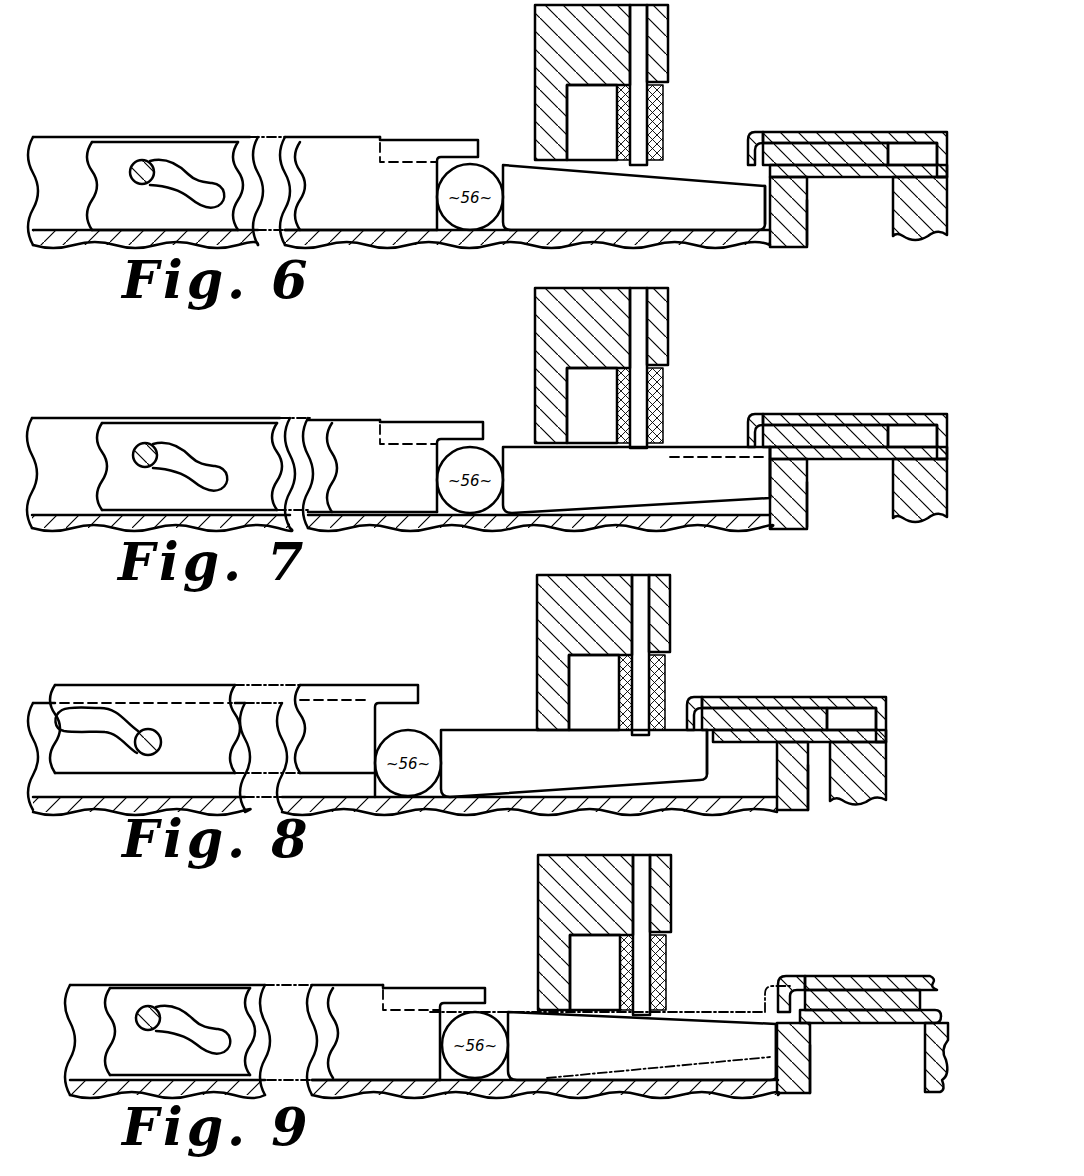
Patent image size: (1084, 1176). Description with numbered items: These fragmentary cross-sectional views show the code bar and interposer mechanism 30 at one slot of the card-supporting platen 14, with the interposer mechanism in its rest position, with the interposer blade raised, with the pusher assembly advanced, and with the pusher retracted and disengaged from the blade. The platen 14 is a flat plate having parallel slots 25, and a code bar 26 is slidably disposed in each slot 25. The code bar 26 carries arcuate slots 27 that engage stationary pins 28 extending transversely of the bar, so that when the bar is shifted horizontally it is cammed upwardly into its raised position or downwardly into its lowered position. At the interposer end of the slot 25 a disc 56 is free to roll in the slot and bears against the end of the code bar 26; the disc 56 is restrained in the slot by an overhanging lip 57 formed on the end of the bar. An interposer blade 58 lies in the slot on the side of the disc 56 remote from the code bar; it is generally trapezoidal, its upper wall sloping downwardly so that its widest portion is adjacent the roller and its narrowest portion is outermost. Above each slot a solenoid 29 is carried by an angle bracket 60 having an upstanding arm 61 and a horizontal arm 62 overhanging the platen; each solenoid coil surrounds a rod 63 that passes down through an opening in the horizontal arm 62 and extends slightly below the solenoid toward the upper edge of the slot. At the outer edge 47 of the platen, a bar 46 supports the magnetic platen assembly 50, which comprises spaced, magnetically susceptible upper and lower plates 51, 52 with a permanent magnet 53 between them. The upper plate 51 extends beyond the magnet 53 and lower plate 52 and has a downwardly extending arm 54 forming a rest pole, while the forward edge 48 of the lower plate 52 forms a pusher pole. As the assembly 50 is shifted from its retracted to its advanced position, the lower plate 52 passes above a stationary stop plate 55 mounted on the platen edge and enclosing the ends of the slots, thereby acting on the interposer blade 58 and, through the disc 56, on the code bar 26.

In FIG. 6, the card-supporting platen 14 is at (72, 243).
In FIG. 7, the card-supporting platen 14 is at (400, 530).
In FIG. 8, the card-supporting platen 14 is at (398, 808).
In FIG. 9, the card-supporting platen 14 is at (572, 1092).
In FIG. 6, the slots 25 is at (65, 165).
In FIG. 7, the slots 25 is at (65, 447).
In FIG. 8, the slots 25 is at (75, 790).
In FIG. 9, the slots 25 is at (90, 1068).
In FIG. 6, the code bar 26 is at (112, 147).
In FIG. 7, the code bar 26 is at (135, 430).
In FIG. 8, the code bar 26 is at (202, 692).
In FIG. 9, the code bar 26 is at (132, 1050).
In FIG. 6, the arcuate slots 27 is at (190, 175).
In FIG. 7, the arcuate slots 27 is at (203, 458).
In FIG. 8, the arcuate slots 27 is at (105, 705).
In FIG. 9, the arcuate slots 27 is at (185, 1010).
In FIG. 6, the stationary pins 28 is at (147, 165).
In FIG. 7, the stationary pins 28 is at (155, 447).
In FIG. 8, the stationary pins 28 is at (163, 744).
In FIG. 9, the stationary pins 28 is at (150, 1010).
In FIG. 6, the solenoid 29 is at (658, 108).
In FIG. 7, the solenoid 29 is at (658, 390).
In FIG. 8, the solenoid 29 is at (660, 678).
In FIG. 9, the solenoid 29 is at (660, 958).
In FIG. 6, the interposer mechanism 30 is at (829, 37).
In FIG. 7, the interposer mechanism 30 is at (865, 345).
In FIG. 8, the interposer mechanism 30 is at (812, 651).
In FIG. 9, the interposer mechanism 30 is at (862, 918).
In FIG. 6, the bar 46 is at (915, 233).
In FIG. 7, the bar 46 is at (918, 518).
In FIG. 8, the bar 46 is at (857, 802).
In FIG. 9, the bar 46 is at (935, 1082).
In FIG. 6, the outer edge of the platen 47 is at (771, 245).
In FIG. 7, the outer edge of the platen 47 is at (773, 527).
In FIG. 8, the outer edge of the platen 47 is at (776, 812).
In FIG. 9, the outer edge of the platen 47 is at (778, 1086).
In FIG. 6, the forward edge of lower plate 48 is at (756, 187).
In FIG. 7, the forward edge of lower plate 48 is at (818, 462).
In FIG. 8, the forward edge of lower plate 48 is at (722, 743).
In FIG. 9, the forward edge of lower plate 48 is at (830, 1026).
In FIG. 6, the magnetic platen assembly 50 is at (923, 131).
In FIG. 7, the magnetic platen assembly 50 is at (845, 412).
In FIG. 8, the magnetic platen assembly 50 is at (778, 696).
In FIG. 9, the magnetic platen assembly 50 is at (842, 974).
In FIG. 6, the upper plate 51 is at (883, 135).
In FIG. 7, the upper plate 51 is at (887, 416).
In FIG. 8, the upper plate 51 is at (840, 698).
In FIG. 9, the upper plate 51 is at (893, 980).
In FIG. 6, the lower plate 52 is at (874, 170).
In FIG. 7, the lower plate 52 is at (863, 474).
In FIG. 8, the lower plate 52 is at (876, 736).
In FIG. 9, the lower plate 52 is at (890, 1022).
In FIG. 6, the permanent magnet 53 is at (840, 148).
In FIG. 7, the permanent magnet 53 is at (824, 440).
In FIG. 8, the permanent magnet 53 is at (750, 712).
In FIG. 9, the permanent magnet 53 is at (826, 992).
In FIG. 6, the downwardly extending arm 54 is at (751, 150).
In FIG. 7, the downwardly extending arm 54 is at (755, 440).
In FIG. 8, the downwardly extending arm 54 is at (708, 692).
In FIG. 9, the downwardly extending arm 54 is at (783, 996).
In FIG. 6, the stationary stop plate 55 is at (800, 223).
In FIG. 7, the stationary stop plate 55 is at (800, 507).
In FIG. 8, the stationary stop plate 55 is at (803, 790).
In FIG. 9, the stationary stop plate 55 is at (802, 1078).
In FIG. 6, the disc 56 is at (470, 197).
In FIG. 7, the disc 56 is at (470, 480).
In FIG. 8, the disc 56 is at (408, 763).
In FIG. 9, the disc 56 is at (475, 1045).
In FIG. 6, the overhanging lip 57 is at (471, 142).
In FIG. 7, the overhanging lip 57 is at (471, 424).
In FIG. 8, the overhanging lip 57 is at (415, 683).
In FIG. 9, the overhanging lip 57 is at (469, 990).
In FIG. 6, the interposer blade 58 is at (634, 197).
In FIG. 7, the interposer blade 58 is at (676, 480).
In FIG. 8, the interposer blade 58 is at (597, 763).
In FIG. 9, the interposer blade 58 is at (645, 1046).
In FIG. 6, the angle bracket 60 is at (686, 22).
In FIG. 7, the angle bracket 60 is at (684, 300).
In FIG. 8, the angle bracket 60 is at (684, 574).
In FIG. 9, the angle bracket 60 is at (686, 857).
In FIG. 6, the upstanding arm 61 is at (550, 110).
In FIG. 7, the upstanding arm 61 is at (550, 392).
In FIG. 8, the upstanding arm 61 is at (548, 689).
In FIG. 9, the upstanding arm 61 is at (550, 967).
In FIG. 6, the horizontal arm 62 is at (663, 37).
In FIG. 7, the horizontal arm 62 is at (663, 320).
In FIG. 8, the horizontal arm 62 is at (666, 601).
In FIG. 9, the horizontal arm 62 is at (665, 895).
In FIG. 6, the rod 63 is at (646, 130).
In FIG. 7, the rod 63 is at (646, 413).
In FIG. 8, the rod 63 is at (641, 722).
In FIG. 9, the rod 63 is at (651, 980).